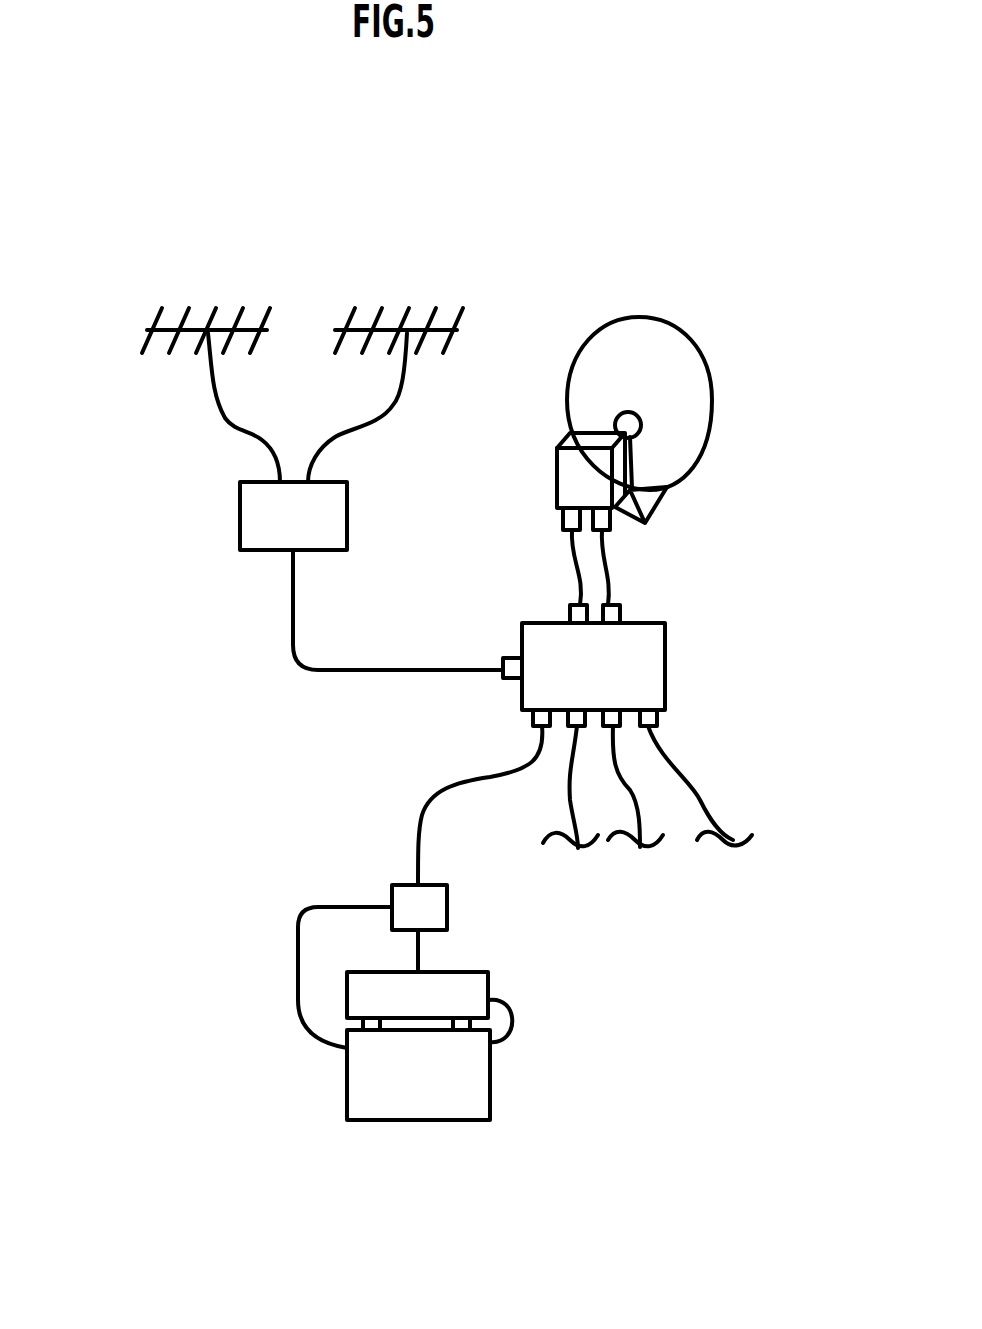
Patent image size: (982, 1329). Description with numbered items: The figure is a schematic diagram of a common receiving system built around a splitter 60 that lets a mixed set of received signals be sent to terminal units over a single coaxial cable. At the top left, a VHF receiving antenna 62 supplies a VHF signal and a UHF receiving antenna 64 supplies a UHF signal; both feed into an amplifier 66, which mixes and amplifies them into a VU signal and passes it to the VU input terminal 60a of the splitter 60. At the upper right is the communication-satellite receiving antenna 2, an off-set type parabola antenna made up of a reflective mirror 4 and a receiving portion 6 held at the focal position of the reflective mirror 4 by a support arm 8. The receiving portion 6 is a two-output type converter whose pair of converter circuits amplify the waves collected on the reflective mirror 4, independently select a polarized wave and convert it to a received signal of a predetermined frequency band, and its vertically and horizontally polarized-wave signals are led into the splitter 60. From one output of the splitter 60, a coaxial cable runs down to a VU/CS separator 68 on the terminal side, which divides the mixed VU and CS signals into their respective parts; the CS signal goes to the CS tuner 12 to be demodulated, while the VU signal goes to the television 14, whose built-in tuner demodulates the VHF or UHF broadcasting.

The receiving antenna 2 is at (688, 388).
The reflective mirror 4 is at (677, 365).
The receiving portion 6 is at (570, 472).
The support arm 8 is at (667, 492).
The CS tuner 12 is at (477, 988).
The television 14 is at (467, 1097).
The splitter 60 is at (586, 742).
The VU input terminal 60a is at (515, 653).
The VHF receiving antenna 62 is at (152, 322).
The UHF receiving antenna 64 is at (457, 320).
The amplifier 66 is at (240, 515).
The VU/CS separator 68 is at (447, 903).